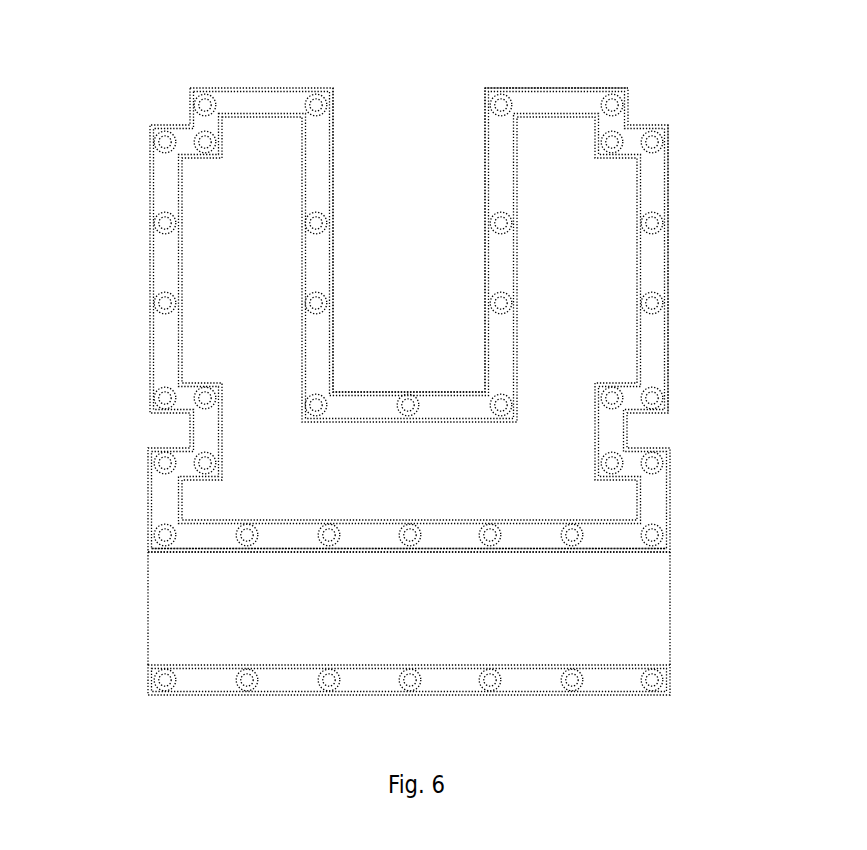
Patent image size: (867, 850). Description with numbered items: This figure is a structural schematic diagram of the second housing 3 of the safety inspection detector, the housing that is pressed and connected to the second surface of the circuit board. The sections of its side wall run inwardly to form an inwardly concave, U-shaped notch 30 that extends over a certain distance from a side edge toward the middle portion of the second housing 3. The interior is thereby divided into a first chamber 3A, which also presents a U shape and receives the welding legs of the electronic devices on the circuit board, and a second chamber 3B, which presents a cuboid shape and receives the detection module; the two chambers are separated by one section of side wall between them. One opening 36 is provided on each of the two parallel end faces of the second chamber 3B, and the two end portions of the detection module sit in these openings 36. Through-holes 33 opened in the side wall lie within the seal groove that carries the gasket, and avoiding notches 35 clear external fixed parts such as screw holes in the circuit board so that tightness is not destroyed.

The second housing 3 is at (690, 276).
The first chamber 3A is at (628, 203).
The second chamber 3B is at (653, 563).
The notch 30 is at (412, 128).
The through-hole 33 is at (203, 86).
The avoiding notch 35 is at (633, 118).
The opening 36 is at (131, 558).